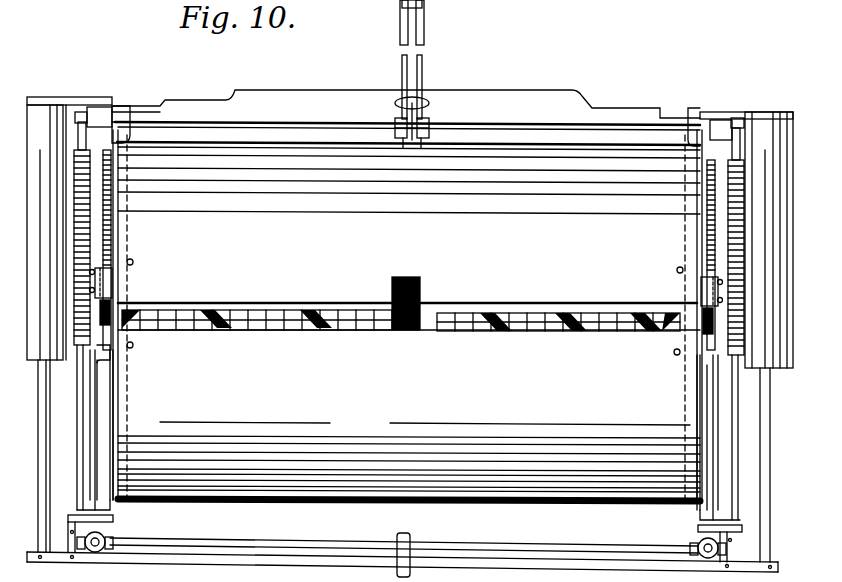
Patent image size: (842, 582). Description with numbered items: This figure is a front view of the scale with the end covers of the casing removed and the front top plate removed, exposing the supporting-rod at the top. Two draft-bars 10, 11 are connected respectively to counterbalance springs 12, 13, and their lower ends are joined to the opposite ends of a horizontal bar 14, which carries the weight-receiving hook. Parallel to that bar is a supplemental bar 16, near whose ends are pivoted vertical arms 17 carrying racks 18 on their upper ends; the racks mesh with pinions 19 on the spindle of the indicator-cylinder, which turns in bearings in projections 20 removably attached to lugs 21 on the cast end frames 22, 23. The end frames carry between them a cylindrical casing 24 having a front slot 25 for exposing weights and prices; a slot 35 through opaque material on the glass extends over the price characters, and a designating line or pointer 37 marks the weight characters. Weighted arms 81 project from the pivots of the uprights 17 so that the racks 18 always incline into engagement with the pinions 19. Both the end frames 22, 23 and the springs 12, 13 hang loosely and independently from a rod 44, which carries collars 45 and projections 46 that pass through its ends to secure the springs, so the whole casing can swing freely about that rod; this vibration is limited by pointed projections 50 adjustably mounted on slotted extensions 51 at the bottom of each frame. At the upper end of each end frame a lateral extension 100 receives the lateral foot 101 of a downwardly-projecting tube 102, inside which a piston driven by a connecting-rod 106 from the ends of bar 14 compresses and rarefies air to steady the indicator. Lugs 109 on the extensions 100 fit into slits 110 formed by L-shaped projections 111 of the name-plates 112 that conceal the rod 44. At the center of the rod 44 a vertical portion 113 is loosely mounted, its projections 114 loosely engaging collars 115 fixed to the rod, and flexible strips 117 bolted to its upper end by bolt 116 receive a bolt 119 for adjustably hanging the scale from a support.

The draft-bar 10 is at (77, 480).
The draft-bar 11 is at (724, 496).
The spring 12 is at (80, 256).
The spring 13 is at (735, 252).
The horizontal bar 14 is at (546, 568).
The supplemental bar 16 is at (336, 542).
The vertical arm 17 is at (95, 414).
The rack 18 is at (108, 228).
The pinion 19 is at (108, 302).
The projection 20 is at (105, 298).
The lug 21 is at (112, 278).
The end frame 22 is at (113, 380).
The end frame 23 is at (697, 394).
The cylindrical casing 24 is at (407, 316).
The slot 25 is at (432, 320).
The slot 35 is at (518, 318).
The designating line or pointer 37 is at (420, 310).
The rod 44 is at (614, 128).
The collar 45 is at (95, 112).
The projection 46 is at (78, 134).
The projection 50 is at (77, 508).
The extension 51 is at (68, 518).
The weighted arm 81 is at (92, 552).
The lateral extension 100 is at (82, 112).
The lateral foot 101 is at (58, 92).
The tube or cylinder 102 is at (40, 200).
The connecting-rod 106 is at (38, 454).
The lug 109 is at (144, 576).
The slit 110 is at (125, 110).
The L-shaped projection 111 is at (135, 115).
The plate 112 is at (407, 340).
The vertical portion 113 is at (418, 118).
The projection 114 is at (404, 146).
The collar 115 is at (395, 118).
The bolt 116 is at (428, 100).
The flexible strip 117 is at (402, 68).
The bolt 119 is at (400, 3).